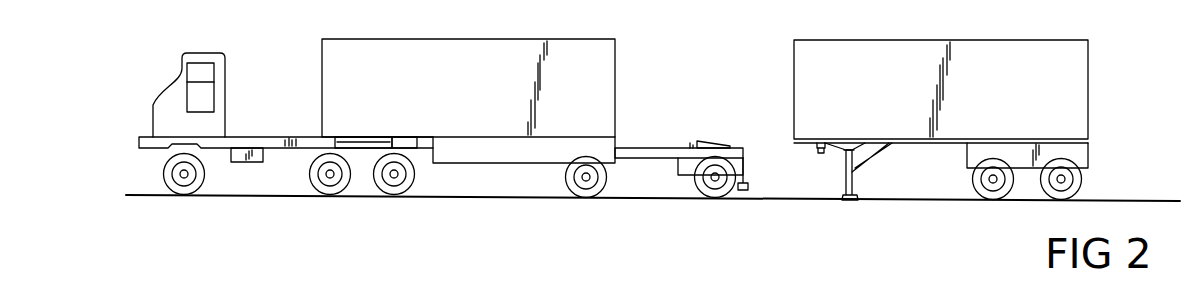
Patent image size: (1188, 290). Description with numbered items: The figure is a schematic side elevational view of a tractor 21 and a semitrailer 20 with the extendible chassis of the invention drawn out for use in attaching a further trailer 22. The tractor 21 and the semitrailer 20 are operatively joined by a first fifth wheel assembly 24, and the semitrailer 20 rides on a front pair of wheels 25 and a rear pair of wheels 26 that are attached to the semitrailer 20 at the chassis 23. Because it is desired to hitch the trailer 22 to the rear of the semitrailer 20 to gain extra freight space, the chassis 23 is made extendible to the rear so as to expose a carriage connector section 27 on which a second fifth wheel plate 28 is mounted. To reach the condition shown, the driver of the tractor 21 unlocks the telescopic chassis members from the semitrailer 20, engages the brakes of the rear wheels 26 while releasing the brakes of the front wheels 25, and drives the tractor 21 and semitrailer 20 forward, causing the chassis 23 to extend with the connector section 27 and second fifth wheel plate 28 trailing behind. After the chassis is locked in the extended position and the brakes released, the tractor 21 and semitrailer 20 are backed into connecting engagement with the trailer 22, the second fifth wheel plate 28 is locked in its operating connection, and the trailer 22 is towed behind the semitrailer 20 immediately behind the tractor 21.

The semitrailer 20 is at (573, 47).
The tractor 21 is at (163, 118).
The trailer 22 is at (878, 47).
The chassis 23 is at (506, 163).
The first fifth wheel assembly 24 is at (375, 137).
The front pair of wheels 25 is at (587, 197).
The rear pair of wheels 26 is at (711, 198).
The carriage connector section 27 is at (642, 148).
The second fifth wheel plate 28 is at (711, 143).